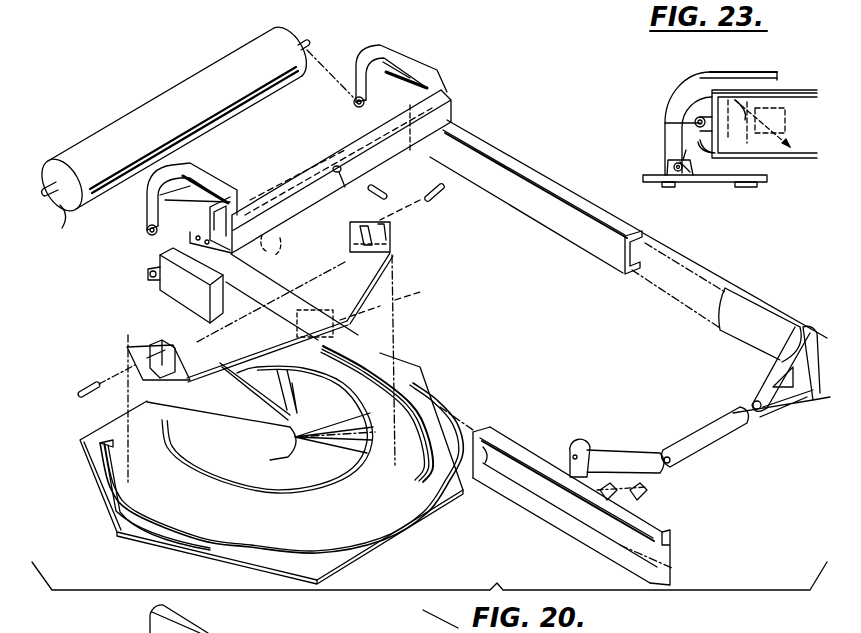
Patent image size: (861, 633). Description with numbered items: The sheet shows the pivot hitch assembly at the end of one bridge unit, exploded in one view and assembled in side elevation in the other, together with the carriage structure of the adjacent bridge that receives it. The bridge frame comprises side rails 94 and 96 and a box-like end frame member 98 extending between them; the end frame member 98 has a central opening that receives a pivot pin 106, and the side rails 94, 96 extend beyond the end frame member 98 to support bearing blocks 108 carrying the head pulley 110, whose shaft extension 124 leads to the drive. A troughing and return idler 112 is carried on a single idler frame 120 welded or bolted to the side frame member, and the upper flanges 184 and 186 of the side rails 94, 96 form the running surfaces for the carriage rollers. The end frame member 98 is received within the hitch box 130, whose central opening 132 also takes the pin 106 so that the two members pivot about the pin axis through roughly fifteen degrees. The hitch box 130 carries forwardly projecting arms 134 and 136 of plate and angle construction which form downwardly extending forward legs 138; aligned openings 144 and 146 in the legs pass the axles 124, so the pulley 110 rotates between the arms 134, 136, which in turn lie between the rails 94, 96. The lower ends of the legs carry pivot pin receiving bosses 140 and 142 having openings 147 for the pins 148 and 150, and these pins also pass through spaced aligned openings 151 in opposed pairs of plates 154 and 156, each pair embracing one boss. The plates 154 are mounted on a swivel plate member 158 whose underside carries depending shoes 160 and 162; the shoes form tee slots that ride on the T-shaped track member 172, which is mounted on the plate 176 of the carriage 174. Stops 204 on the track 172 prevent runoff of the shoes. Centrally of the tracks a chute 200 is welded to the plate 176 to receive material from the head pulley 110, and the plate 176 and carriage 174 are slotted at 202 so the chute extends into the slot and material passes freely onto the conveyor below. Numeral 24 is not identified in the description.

In FIG. 20, the shaft 24 is at (62, 215).
In FIG. 20, the side rail 94 is at (556, 205).
In FIG. 20, the side rail 96 is at (520, 448).
In FIG. 23, the side rail 96 is at (782, 183).
In FIG. 20, the end frame member 98 is at (271, 244).
In FIG. 23, the end frame member 98 is at (793, 155).
In FIG. 20, the pivot pin 106 is at (377, 187).
In FIG. 20, the bearing block 108 is at (148, 278).
In FIG. 20, the head pulley 110 is at (195, 74).
In FIG. 23, the head pulley 110 is at (700, 140).
In FIG. 20, the troughing and return idler 112 is at (618, 448).
In FIG. 20, the idler frame 120 is at (785, 408).
In FIG. 20, the shaft extension 124 is at (310, 40).
In FIG. 23, the shaft extension 124 is at (695, 123).
In FIG. 20, the hitch box 130 is at (276, 167).
In FIG. 23, the hitch box 130 is at (733, 73).
In FIG. 20, the central opening 132 is at (345, 187).
In FIG. 20, the forwardly projecting arm 134 is at (188, 168).
In FIG. 23, the forwardly projecting arm 134 is at (683, 93).
In FIG. 20, the forwardly projecting arm 136 is at (417, 65).
In FIG. 23, the forward leg 138 is at (667, 135).
In FIG. 20, the pivot pin receiving boss 140 is at (150, 240).
In FIG. 20, the pivot pin receiving boss 142 is at (355, 102).
In FIG. 20, the aligned opening 144 is at (200, 197).
In FIG. 20, the aligned opening 146 is at (383, 77).
In FIG. 20, the opening 147 is at (147, 228).
In FIG. 20, the pin 148 is at (87, 382).
In FIG. 23, the pin 148 is at (682, 173).
In FIG. 20, the pin 150 is at (432, 201).
In FIG. 20, the spaced aligned opening 151 is at (170, 380).
In FIG. 23, the spaced aligned opening 151 is at (662, 165).
In FIG. 20, the plate 154 is at (165, 345).
In FIG. 20, the plate 156 is at (352, 240).
In FIG. 20, the swivel plate member 158 is at (360, 272).
In FIG. 23, the swivel plate member 158 is at (763, 178).
In FIG. 23, the shoe 160 is at (670, 188).
In FIG. 20, the shoe 162 is at (380, 306).
In FIG. 23, the shoe 162 is at (763, 187).
In FIG. 20, the track member 172 is at (420, 400).
In FIG. 20, the carriage 174 is at (440, 515).
In FIG. 20, the plate 176 is at (380, 545).
In FIG. 20, the upper flange 184 is at (545, 452).
In FIG. 20, the upper flange 186 is at (760, 300).
In FIG. 20, the chute 200 is at (287, 482).
In FIG. 20, the slot 202 is at (80, 440).
In FIG. 20, the stop 204 is at (62, 428).